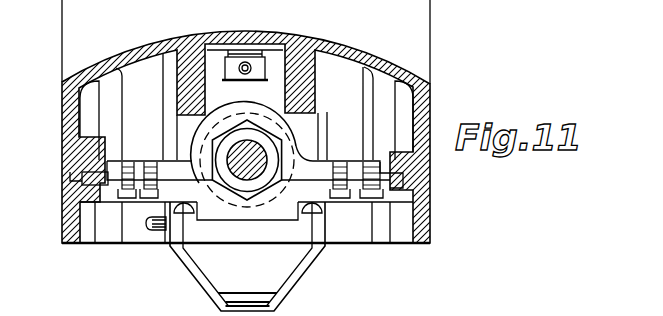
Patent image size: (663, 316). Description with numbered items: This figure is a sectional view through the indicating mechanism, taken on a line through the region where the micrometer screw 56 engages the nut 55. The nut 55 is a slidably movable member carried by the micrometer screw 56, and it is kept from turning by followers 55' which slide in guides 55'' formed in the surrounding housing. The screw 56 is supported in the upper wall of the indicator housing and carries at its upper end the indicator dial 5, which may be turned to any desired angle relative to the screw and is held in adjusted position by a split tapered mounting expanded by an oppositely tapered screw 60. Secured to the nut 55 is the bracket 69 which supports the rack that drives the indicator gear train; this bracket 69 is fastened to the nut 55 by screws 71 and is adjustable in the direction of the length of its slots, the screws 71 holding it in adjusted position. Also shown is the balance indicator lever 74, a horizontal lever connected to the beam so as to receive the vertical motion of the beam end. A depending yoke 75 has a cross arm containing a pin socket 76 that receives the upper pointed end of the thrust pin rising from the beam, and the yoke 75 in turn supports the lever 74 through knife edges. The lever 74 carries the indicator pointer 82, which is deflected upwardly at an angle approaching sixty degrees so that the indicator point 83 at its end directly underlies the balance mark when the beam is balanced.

The nut 55 is at (252, 145).
The followers 55' is at (63, 120).
The guides 55'' is at (54, 181).
The micrometer screw 56 is at (263, 154).
The bracket 69 is at (150, 163).
The screws 71 is at (155, 155).
The balance indicator lever 74 is at (188, 127).
The depending yoke 75 is at (268, 66).
The pin socket 76 is at (246, 64).
The indicator pointer 82 is at (203, 278).
The indicator point 83 is at (250, 303).
The tapered screw 60 is at (72, 307).
The indicator dial 5 is at (387, 307).